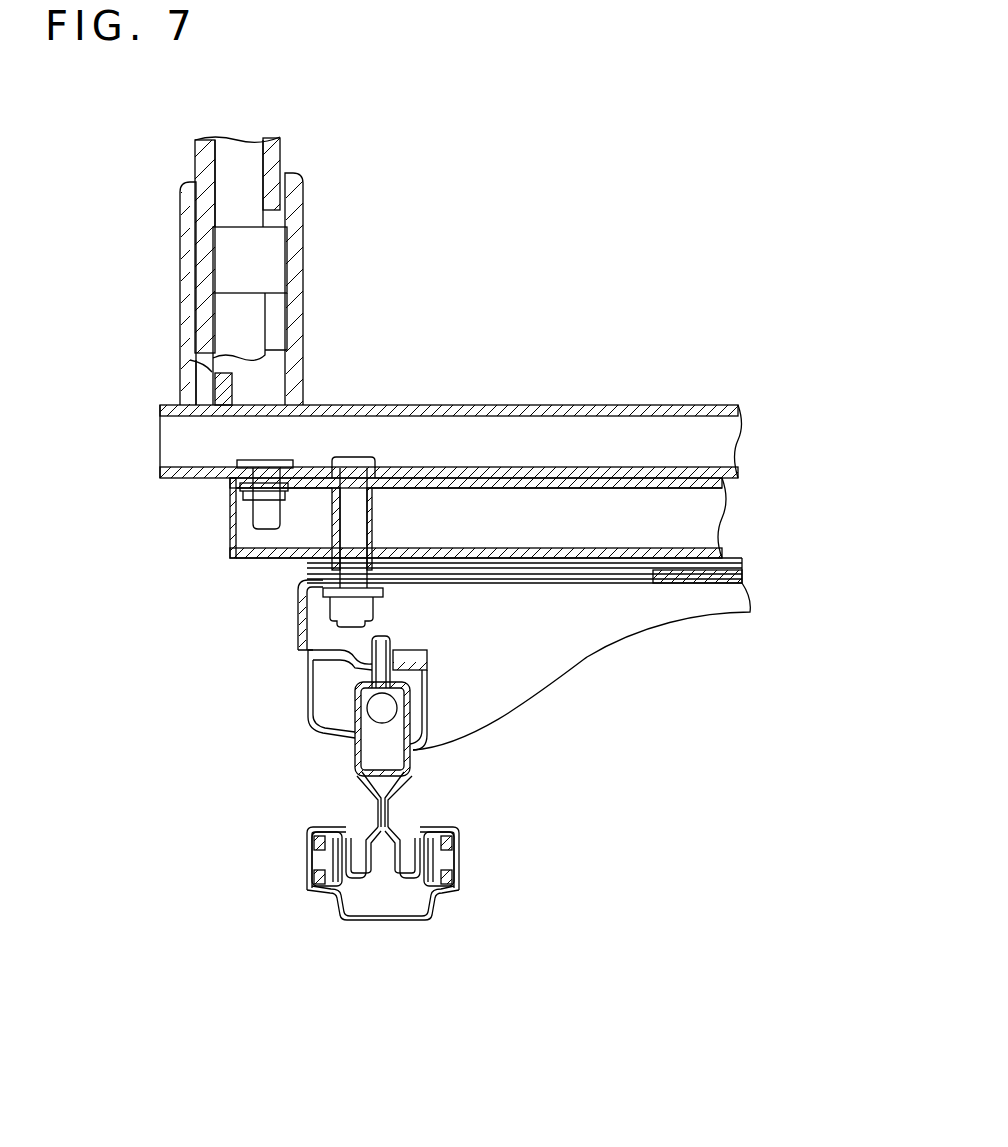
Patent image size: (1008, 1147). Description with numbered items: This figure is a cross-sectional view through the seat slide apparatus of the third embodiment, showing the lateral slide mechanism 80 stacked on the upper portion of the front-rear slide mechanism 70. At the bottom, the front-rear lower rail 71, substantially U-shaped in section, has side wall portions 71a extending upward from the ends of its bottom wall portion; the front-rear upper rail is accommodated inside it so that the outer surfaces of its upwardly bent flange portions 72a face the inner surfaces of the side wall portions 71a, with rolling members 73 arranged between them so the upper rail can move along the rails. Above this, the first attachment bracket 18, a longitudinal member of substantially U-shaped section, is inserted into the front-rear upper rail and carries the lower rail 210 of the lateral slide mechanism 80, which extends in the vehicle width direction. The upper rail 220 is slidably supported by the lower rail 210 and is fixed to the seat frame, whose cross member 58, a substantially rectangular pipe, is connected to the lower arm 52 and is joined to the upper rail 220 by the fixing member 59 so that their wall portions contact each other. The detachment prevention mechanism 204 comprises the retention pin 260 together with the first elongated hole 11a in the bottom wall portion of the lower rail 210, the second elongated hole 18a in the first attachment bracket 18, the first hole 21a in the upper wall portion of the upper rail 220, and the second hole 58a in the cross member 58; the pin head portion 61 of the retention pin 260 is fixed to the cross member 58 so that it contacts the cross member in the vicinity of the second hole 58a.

The lower arm 52 is at (305, 247).
The cross member 58 is at (567, 406).
The second hole 58a is at (333, 467).
The pin head portion 61 is at (353, 459).
The first hole 21a is at (377, 476).
The lateral slide mechanism 80 is at (652, 366).
The fixing member 59 is at (250, 493).
The upper rail 220 is at (230, 528).
The retention pin 260 is at (342, 520).
The lower rail 210 is at (742, 563).
The detachment prevention mechanism 204 is at (262, 628).
The first attachment bracket 18 is at (298, 640).
The second elongated hole 18a is at (598, 575).
The first elongated hole 11a is at (553, 570).
The front-rear slide mechanism 70 is at (262, 822).
The flange portion 72a is at (346, 832).
The rolling member 73 is at (318, 862).
The side wall portion 71a is at (305, 882).
The front-rear lower rail 71 is at (385, 922).